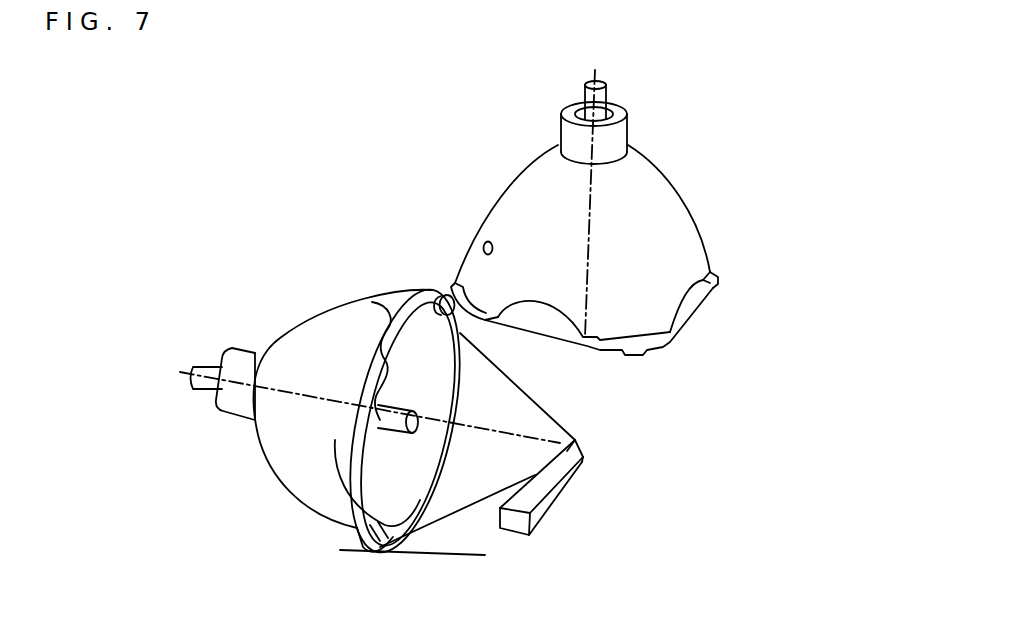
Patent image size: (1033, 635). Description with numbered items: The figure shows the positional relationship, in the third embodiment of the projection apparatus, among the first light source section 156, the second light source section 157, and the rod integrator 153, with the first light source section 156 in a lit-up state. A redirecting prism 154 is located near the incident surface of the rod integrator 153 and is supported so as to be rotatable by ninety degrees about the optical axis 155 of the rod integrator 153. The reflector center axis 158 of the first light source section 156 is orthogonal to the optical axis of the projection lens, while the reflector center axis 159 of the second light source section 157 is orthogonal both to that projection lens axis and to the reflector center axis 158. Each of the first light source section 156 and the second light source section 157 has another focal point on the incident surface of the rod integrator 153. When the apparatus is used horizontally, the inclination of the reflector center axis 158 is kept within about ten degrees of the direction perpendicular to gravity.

The rod integrator 153 is at (563, 485).
The redirecting prism 154 is at (583, 448).
The optical axis 155 is at (340, 550).
The first light source section 156 is at (280, 338).
The second light source section 157 is at (653, 197).
The reflector center axis 158 is at (488, 428).
The reflector center axis 159 is at (588, 262).